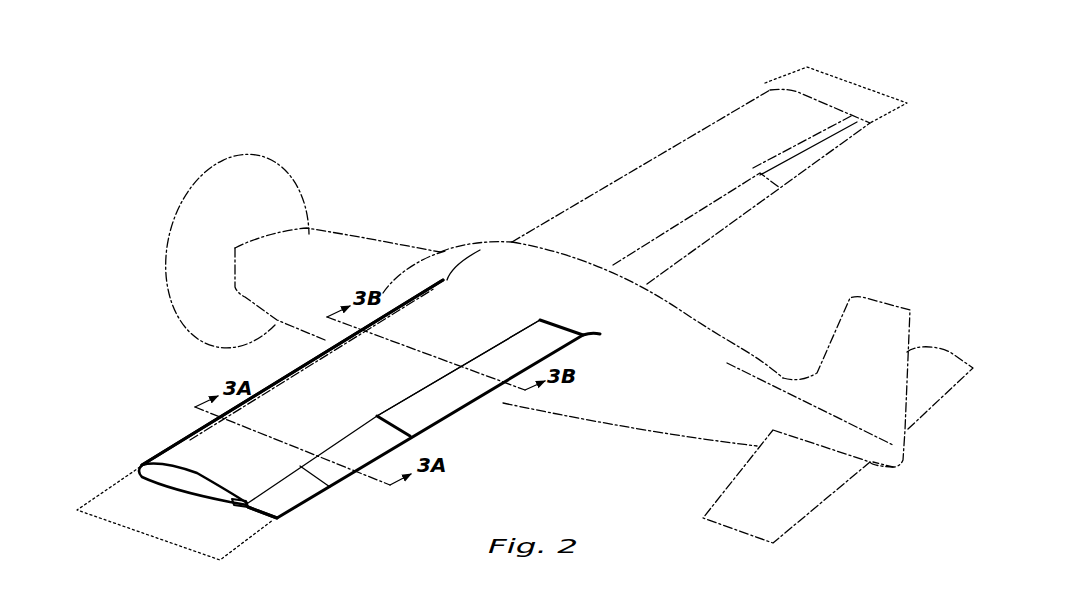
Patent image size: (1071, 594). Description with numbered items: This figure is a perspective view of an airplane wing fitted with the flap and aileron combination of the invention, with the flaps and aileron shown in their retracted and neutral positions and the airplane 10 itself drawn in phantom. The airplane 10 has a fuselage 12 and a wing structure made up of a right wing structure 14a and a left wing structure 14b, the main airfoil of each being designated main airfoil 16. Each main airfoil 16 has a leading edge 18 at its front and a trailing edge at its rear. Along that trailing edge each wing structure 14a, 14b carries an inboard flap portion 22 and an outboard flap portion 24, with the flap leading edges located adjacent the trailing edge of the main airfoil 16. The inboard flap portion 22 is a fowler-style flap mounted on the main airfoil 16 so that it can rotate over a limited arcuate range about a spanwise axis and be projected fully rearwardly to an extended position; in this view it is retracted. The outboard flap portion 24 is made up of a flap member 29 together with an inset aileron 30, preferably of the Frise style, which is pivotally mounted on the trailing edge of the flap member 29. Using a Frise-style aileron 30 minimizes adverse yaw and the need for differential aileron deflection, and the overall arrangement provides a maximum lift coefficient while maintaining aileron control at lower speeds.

The airplane 10 is at (440, 214).
The fuselage 12 is at (668, 333).
The right wing structure 14a is at (836, 92).
The left wing structure 14b is at (139, 530).
The main airfoil 16 is at (667, 163).
The leading edge 18 is at (177, 442).
The inboard flap portion 22 is at (430, 408).
The outboard flap portion 24 is at (232, 512).
The flap member 29 is at (317, 480).
The aileron 30 is at (285, 505).